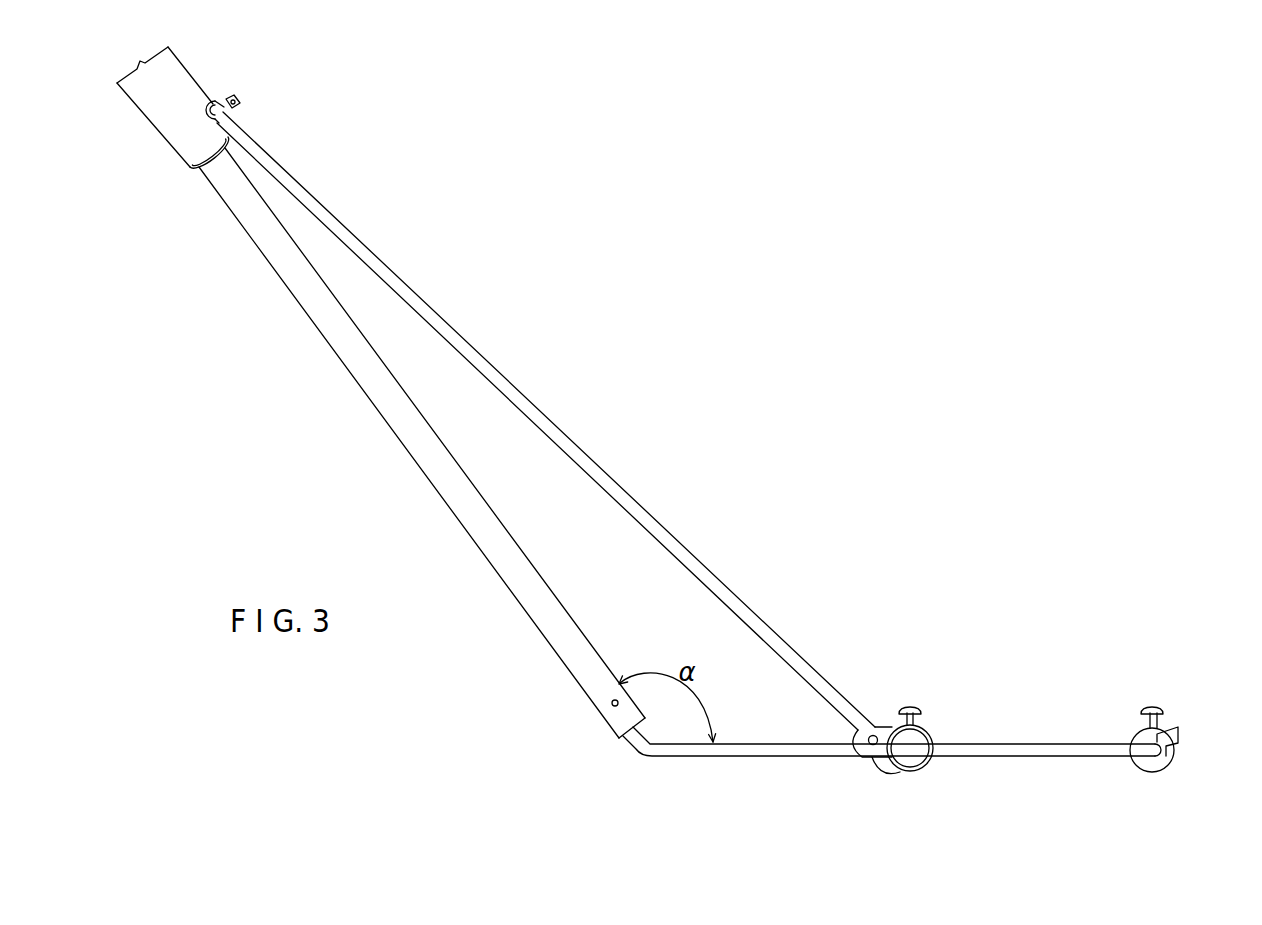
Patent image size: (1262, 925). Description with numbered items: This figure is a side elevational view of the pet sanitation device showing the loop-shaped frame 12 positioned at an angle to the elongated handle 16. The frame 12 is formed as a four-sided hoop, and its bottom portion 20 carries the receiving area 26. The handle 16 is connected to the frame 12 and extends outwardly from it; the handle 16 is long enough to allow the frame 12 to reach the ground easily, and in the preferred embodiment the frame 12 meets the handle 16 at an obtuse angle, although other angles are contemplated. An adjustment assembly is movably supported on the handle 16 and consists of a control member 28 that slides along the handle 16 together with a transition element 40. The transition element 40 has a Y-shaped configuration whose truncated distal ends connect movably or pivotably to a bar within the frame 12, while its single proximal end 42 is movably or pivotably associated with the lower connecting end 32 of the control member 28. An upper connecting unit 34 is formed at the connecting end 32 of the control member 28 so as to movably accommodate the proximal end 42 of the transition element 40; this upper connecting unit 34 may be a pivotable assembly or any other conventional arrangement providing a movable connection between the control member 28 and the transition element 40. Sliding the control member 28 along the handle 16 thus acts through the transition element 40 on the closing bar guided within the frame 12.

The frame 12 is at (748, 752).
The handle 16 is at (380, 384).
The bottom portion 20 is at (1143, 748).
The receiving area 26 is at (1165, 755).
The control member 28 is at (163, 117).
The lower connecting end 32 is at (185, 147).
The upper connecting unit 34 is at (228, 96).
The transition element 40 is at (468, 347).
The proximal end 42 is at (238, 120).